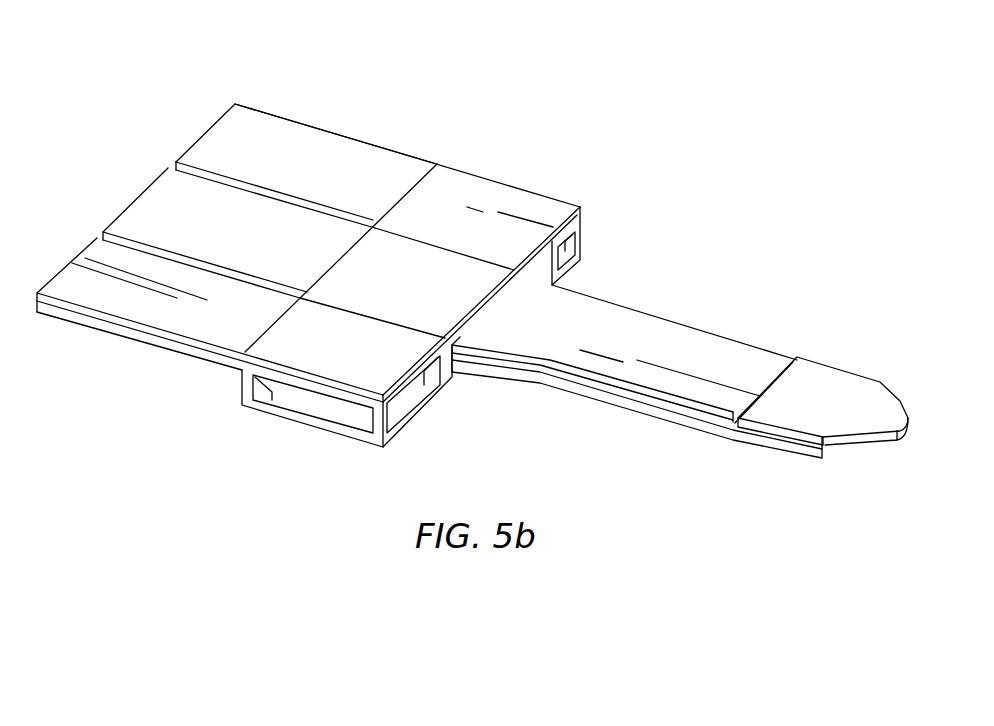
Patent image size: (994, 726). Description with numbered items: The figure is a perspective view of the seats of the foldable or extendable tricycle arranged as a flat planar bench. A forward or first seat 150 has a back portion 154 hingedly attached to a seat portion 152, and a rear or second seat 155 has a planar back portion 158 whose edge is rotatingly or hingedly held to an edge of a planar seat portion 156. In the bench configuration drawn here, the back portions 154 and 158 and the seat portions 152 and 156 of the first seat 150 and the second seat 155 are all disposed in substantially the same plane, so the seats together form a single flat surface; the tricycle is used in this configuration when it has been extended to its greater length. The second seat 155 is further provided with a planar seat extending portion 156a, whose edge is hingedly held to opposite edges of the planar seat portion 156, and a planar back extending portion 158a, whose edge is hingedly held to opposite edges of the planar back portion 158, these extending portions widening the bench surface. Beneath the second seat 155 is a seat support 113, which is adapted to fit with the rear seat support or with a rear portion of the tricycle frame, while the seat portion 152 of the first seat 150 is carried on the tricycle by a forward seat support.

The seat support 113 is at (313, 422).
The first seat 150 is at (472, 265).
The seat portion 152 is at (792, 418).
The back portion 154 is at (597, 352).
The second seat 155 is at (330, 252).
The planar seat portion 156 is at (478, 217).
The planar seat extending portion 156a is at (543, 213).
The planar back portion 158 is at (160, 206).
The planar back extending portion 158a is at (178, 340).